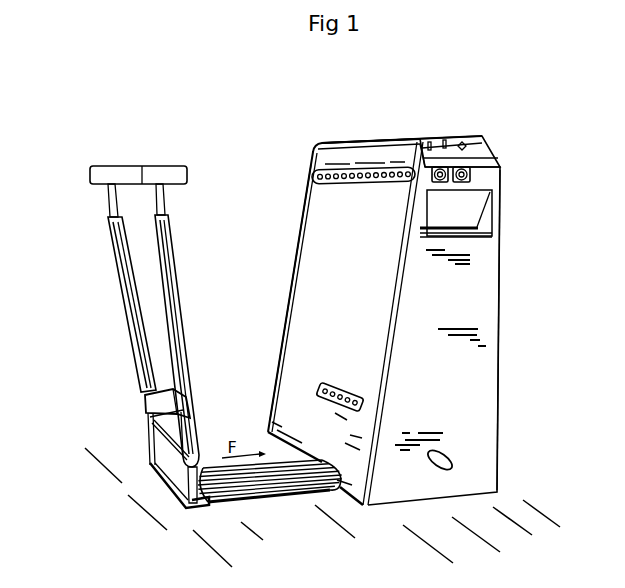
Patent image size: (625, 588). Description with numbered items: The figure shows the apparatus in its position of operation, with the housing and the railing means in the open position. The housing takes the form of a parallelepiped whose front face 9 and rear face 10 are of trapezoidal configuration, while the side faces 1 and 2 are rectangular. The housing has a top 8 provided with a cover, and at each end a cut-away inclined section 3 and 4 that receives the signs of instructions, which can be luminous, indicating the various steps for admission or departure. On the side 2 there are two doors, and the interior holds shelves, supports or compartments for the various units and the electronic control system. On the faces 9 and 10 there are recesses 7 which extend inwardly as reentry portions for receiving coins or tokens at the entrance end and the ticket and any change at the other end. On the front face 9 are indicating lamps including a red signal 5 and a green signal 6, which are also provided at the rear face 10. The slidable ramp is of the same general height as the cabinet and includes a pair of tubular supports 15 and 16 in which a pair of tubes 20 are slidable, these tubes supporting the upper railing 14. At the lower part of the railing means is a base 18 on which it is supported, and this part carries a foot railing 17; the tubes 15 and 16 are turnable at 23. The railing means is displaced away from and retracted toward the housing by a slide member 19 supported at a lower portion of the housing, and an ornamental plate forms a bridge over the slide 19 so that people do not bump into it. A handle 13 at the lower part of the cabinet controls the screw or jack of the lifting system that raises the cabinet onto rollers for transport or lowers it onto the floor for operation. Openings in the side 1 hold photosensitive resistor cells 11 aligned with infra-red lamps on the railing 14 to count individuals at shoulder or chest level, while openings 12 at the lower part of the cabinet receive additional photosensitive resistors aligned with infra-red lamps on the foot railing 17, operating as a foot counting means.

The side face 1 is at (305, 278).
The side face 2 is at (502, 267).
The cut-away inclined section 3 is at (315, 146).
The cut-away inclined section 4 is at (490, 148).
The red signal 5 is at (441, 167).
The green signal 6 is at (469, 175).
The recess 7 is at (475, 215).
The top 8 is at (376, 138).
The front face 9 is at (488, 313).
The rear face 10 is at (302, 210).
The photosensitive resistor cells 11 is at (308, 170).
The openings 12 is at (318, 387).
The handle 13 is at (452, 462).
The upper railing 14 is at (132, 165).
The tubular support 15 is at (127, 303).
The tubular support 16 is at (180, 305).
The foot railing 17 is at (143, 403).
The base 18 is at (166, 460).
The slide member 19 is at (287, 491).
The tubes 20 is at (110, 202).
The turnable point 23 is at (186, 462).